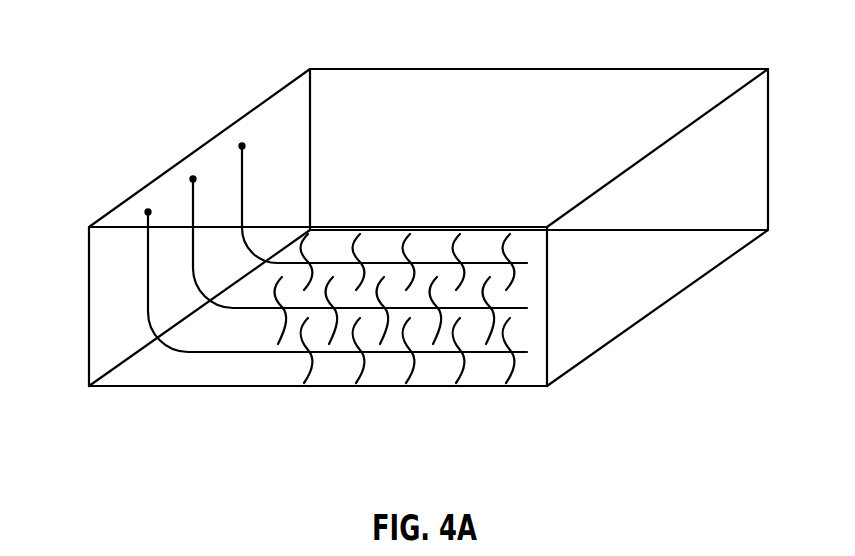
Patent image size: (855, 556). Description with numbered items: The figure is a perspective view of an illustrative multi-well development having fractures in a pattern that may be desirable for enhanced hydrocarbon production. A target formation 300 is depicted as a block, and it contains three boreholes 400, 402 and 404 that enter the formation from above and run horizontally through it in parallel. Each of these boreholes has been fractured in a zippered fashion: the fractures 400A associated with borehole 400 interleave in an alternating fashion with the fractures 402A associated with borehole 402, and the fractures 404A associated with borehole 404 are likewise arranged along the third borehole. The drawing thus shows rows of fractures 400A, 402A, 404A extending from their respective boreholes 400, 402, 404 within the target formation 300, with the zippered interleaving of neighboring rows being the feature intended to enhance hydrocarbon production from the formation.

The target formation 300 is at (337, 42).
The borehole 400 is at (242, 146).
The borehole 402 is at (193, 179).
The borehole 404 is at (148, 212).
The first row of heating elements 400A is at (452, 250).
The second row of heating elements 402A is at (487, 303).
The third row of heating elements 404A is at (508, 353).